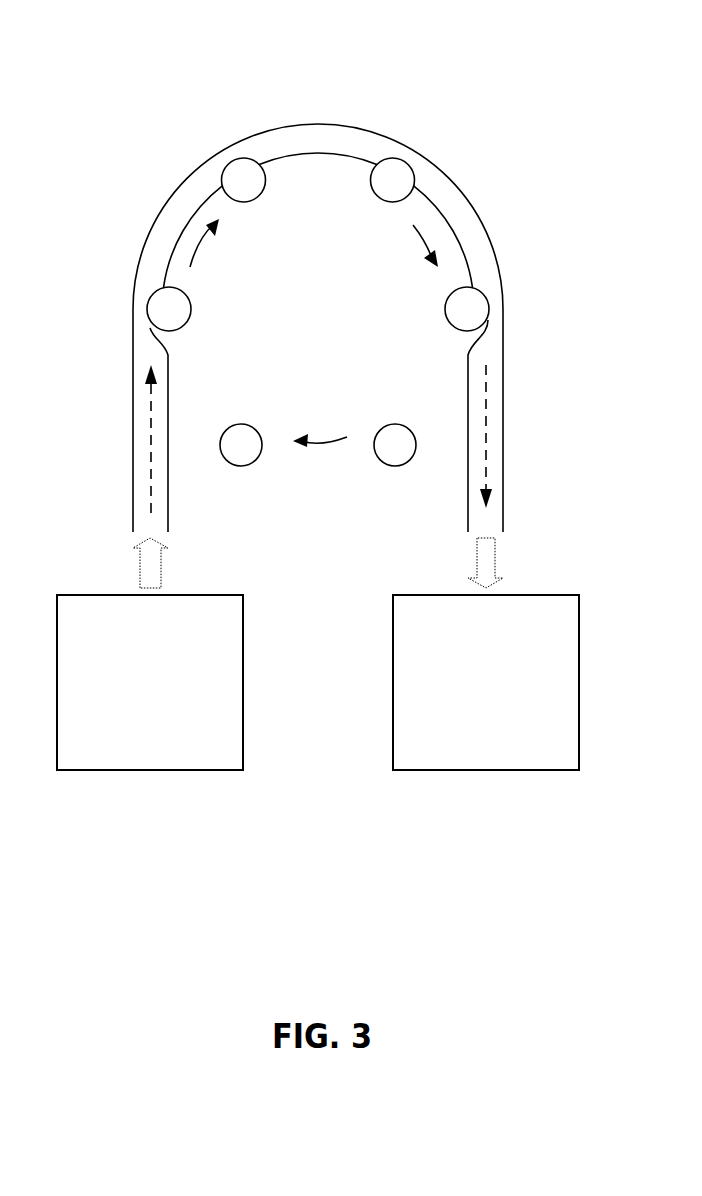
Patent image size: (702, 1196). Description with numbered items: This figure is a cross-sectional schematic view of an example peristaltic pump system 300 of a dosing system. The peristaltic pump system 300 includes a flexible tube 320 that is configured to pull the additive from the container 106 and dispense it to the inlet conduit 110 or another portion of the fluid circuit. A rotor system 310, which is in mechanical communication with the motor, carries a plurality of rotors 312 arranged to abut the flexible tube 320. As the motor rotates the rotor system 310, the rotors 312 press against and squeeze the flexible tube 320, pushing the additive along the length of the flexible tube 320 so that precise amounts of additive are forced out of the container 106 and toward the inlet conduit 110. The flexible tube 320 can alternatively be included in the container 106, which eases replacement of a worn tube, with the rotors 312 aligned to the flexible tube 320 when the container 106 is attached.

The peristaltic pump system 300 is at (133, 72).
The flexible tube 320 is at (455, 183).
The rotor system 310 is at (332, 326).
The rotors 312 is at (230, 465).
The container 106 is at (170, 694).
The inlet conduit 110 is at (506, 694).